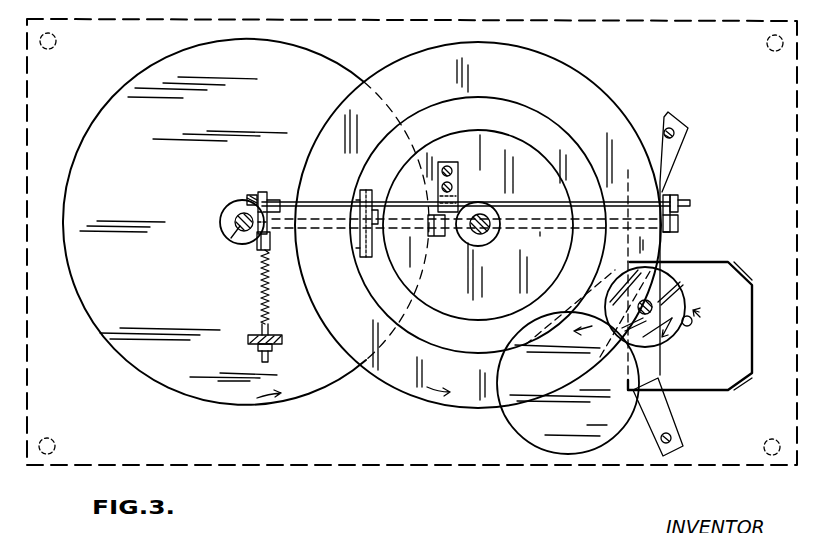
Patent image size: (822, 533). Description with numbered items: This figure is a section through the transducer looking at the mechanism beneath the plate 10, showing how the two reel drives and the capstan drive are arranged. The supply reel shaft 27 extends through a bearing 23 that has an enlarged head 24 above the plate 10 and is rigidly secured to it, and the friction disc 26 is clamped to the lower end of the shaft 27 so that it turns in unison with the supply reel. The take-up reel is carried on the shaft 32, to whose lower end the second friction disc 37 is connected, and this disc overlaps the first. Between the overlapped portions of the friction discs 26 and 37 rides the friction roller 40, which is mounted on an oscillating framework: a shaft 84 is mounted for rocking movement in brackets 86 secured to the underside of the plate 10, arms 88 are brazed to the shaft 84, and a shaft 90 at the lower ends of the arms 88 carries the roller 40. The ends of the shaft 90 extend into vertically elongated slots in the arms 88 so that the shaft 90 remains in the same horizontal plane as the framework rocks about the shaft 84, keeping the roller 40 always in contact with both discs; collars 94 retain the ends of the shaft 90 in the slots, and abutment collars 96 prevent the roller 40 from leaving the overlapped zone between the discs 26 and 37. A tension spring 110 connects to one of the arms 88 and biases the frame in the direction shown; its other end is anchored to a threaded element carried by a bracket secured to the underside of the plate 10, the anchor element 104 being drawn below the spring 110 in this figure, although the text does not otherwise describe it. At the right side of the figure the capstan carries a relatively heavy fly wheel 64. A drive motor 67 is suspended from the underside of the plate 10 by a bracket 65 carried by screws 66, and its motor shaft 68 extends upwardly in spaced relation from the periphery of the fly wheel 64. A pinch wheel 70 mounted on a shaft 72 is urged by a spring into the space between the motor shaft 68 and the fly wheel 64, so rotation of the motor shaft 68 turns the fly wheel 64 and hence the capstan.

The plate 10 is at (268, 466).
The bearing 23 is at (236, 225).
The enlarged head 24 is at (221, 214).
The friction disc 26 is at (160, 378).
The shaft 27 is at (226, 241).
The shaft 32 is at (484, 233).
The friction disc 37 is at (600, 103).
The friction roller 40 is at (362, 257).
The fly wheel 64 is at (514, 412).
The bracket 65 is at (670, 170).
The screws 66 is at (674, 130).
The drive motor 67 is at (708, 391).
The motor shaft 68 is at (690, 325).
The pinch wheel 70 is at (678, 270).
The shaft 72 is at (660, 298).
The shaft 84 is at (540, 202).
The bracket 86 is at (261, 192).
The arms 88 is at (261, 251).
The shaft 90 is at (540, 229).
The collars 94 is at (270, 205).
The abutment collars 96 is at (270, 246).
The anchor 104 is at (283, 341).
The tension spring 110 is at (258, 306).